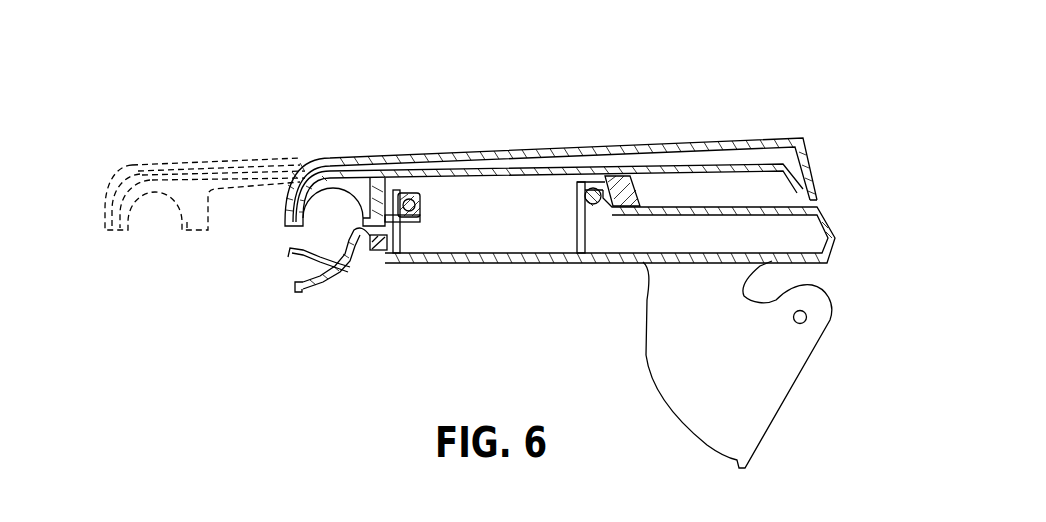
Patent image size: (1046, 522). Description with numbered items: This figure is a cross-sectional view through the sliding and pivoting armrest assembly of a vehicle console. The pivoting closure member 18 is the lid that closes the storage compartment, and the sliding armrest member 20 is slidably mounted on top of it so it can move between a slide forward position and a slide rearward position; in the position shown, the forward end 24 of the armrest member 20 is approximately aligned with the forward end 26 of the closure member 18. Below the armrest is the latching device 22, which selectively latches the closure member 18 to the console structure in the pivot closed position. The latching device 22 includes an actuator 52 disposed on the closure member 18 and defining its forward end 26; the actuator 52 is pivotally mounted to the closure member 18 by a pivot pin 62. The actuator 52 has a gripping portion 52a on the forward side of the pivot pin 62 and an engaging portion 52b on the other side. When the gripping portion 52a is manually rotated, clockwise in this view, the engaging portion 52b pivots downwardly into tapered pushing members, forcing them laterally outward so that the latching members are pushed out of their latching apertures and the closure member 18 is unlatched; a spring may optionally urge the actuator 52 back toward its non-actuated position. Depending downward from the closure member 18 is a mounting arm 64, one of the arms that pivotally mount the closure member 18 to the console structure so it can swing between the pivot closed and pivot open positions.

The pivoting closure member 18 is at (637, 266).
The sliding armrest member 20 is at (690, 148).
The latching device 22 is at (329, 290).
The forward end of the armrest member 24 is at (127, 174).
The forward end of the closure member 26 is at (290, 306).
The actuator 52 is at (330, 229).
The gripping portion 52a is at (293, 281).
The engaging portion 52b is at (372, 229).
The pivot pin 62 is at (371, 251).
The mounting arm 64 is at (764, 398).